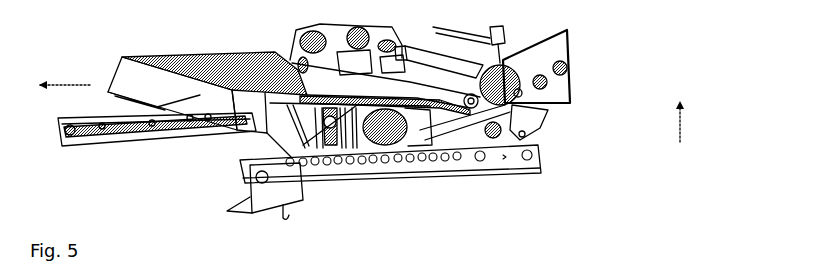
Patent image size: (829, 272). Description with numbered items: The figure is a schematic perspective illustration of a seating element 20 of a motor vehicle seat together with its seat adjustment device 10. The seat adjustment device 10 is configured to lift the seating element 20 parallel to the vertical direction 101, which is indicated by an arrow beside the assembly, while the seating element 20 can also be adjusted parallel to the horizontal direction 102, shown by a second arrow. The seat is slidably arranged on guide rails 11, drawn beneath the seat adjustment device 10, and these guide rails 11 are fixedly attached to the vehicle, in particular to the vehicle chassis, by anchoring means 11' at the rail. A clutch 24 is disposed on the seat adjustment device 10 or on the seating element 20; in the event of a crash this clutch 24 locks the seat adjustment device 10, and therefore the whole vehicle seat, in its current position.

The seating element 20 is at (133, 52).
The horizontal direction 102 is at (73, 83).
The seat adjustment device 10 is at (108, 174).
The vertical direction 101 is at (680, 123).
The guide rails 11 is at (390, 184).
The anchoring means 11' is at (302, 205).
The clutch 24 is at (430, 163).